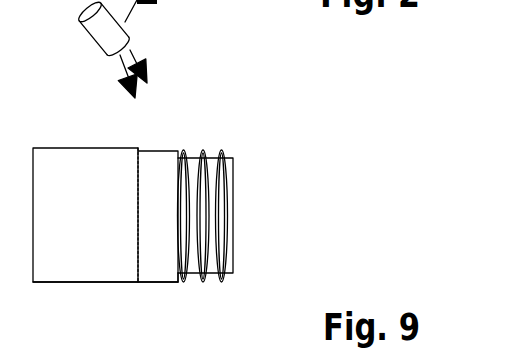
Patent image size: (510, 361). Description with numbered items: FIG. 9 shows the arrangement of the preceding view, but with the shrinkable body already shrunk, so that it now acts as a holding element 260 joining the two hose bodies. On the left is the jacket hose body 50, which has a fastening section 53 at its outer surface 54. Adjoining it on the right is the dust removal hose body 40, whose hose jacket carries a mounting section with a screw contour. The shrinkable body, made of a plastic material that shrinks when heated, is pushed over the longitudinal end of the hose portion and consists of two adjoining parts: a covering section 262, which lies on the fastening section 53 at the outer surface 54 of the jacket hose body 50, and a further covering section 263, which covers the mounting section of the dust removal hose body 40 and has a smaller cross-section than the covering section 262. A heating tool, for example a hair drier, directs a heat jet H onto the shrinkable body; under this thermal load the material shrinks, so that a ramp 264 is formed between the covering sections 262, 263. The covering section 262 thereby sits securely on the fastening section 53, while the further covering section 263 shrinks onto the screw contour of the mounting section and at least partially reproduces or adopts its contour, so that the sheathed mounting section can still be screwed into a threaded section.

The dust removal hose body 40 is at (204, 199).
The jacket hose body 50 is at (64, 148).
The fastening section 53 is at (158, 156).
The outer surface 54 is at (53, 275).
The holding element 260 is at (181, 146).
The covering section 262 is at (167, 283).
The further covering section 263 is at (198, 285).
The ramp 264 is at (186, 150).
The heat jet H is at (141, 56).